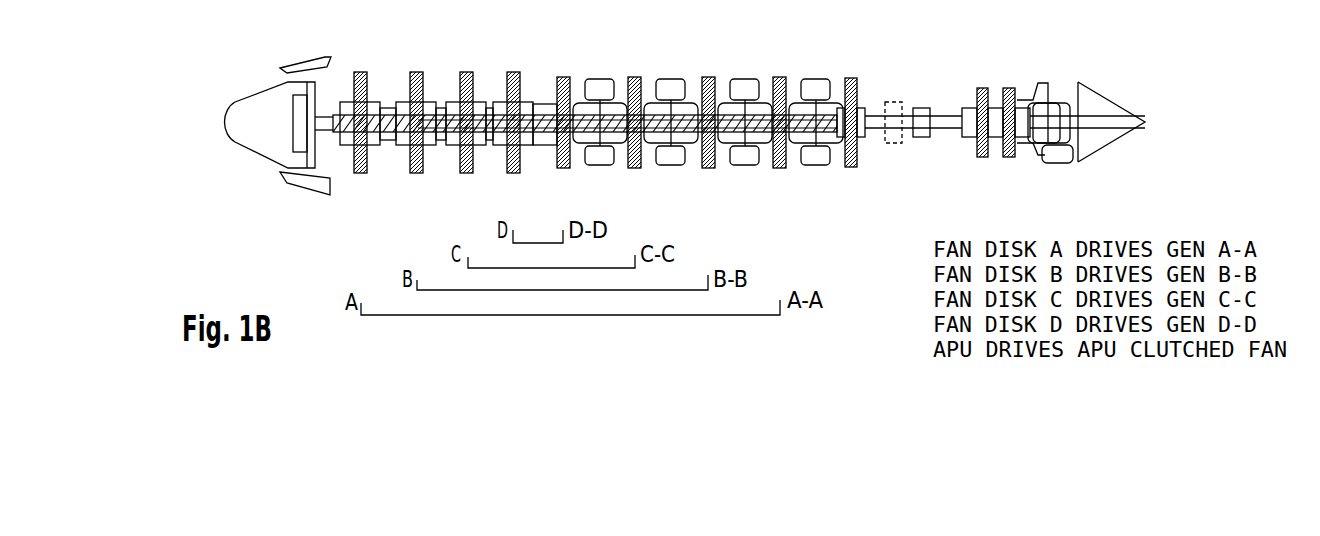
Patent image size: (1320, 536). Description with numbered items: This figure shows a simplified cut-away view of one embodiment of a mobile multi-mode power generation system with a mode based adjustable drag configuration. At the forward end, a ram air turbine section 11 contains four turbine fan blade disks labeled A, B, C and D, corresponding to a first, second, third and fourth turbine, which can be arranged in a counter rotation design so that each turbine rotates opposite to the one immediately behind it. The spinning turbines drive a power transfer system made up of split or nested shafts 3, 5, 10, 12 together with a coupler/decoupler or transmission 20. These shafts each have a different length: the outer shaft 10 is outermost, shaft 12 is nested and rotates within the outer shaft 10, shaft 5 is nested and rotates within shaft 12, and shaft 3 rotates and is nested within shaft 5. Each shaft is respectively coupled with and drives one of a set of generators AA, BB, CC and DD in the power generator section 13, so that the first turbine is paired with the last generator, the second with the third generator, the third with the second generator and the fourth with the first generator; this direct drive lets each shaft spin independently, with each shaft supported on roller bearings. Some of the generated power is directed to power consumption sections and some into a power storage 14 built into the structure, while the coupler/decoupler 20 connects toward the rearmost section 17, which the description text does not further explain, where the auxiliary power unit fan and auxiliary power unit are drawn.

The shaft 3 is at (403, 146).
The shaft 5 is at (450, 146).
The outer shaft 10 is at (525, 146).
The ram air turbine section 11 is at (523, 53).
The shaft 12 is at (655, 133).
The power generator section 13 is at (815, 53).
The power storage 14 is at (930, 53).
The APU section 17 is at (1135, 53).
The coupler/decoupler or transmission 20 is at (899, 143).